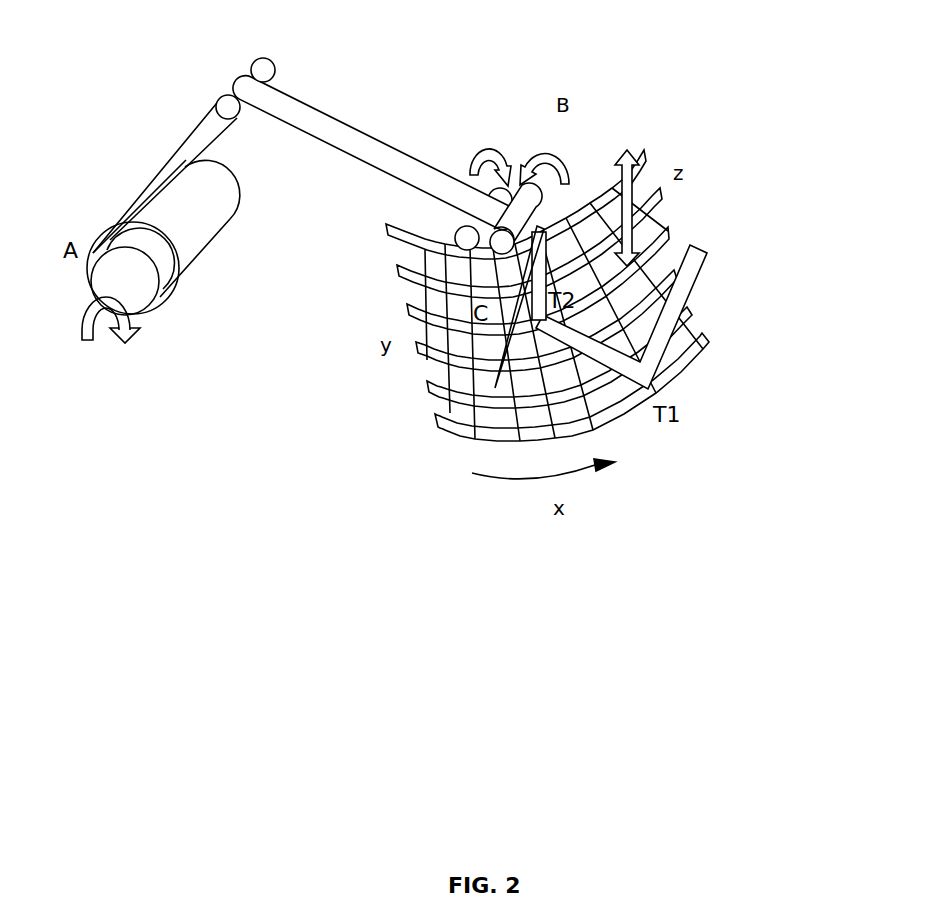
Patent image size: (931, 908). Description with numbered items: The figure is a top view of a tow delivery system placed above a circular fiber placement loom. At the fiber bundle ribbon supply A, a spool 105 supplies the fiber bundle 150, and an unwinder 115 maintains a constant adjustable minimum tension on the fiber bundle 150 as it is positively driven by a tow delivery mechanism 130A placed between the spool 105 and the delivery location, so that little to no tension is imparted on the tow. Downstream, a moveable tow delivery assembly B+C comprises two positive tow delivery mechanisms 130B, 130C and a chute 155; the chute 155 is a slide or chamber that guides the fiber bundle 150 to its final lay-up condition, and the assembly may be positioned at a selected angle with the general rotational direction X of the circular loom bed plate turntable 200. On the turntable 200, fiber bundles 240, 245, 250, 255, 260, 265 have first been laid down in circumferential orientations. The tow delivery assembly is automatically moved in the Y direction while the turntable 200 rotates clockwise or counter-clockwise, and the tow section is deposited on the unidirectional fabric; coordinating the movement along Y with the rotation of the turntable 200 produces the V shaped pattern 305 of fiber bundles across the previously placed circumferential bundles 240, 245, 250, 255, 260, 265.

The spool 105 is at (193, 238).
The unwinder 115 is at (132, 297).
The tow delivery mechanism 130A is at (266, 60).
The positive tow delivery mechanism 130B is at (463, 240).
The positive tow delivery mechanism 130C is at (533, 203).
The fiber bundle 150 is at (337, 116).
The chute 155 is at (530, 307).
The circular loom bed plate turntable 200 is at (705, 383).
The circumferential fiber bundle 240 is at (412, 240).
The circumferential fiber bundle 245 is at (657, 183).
The circumferential fiber bundle 250 is at (668, 230).
The circumferential fiber bundle 255 is at (674, 272).
The circumferential fiber bundle 260 is at (443, 388).
The circumferential fiber bundle 265 is at (710, 343).
The V shaped pattern 305 is at (690, 277).